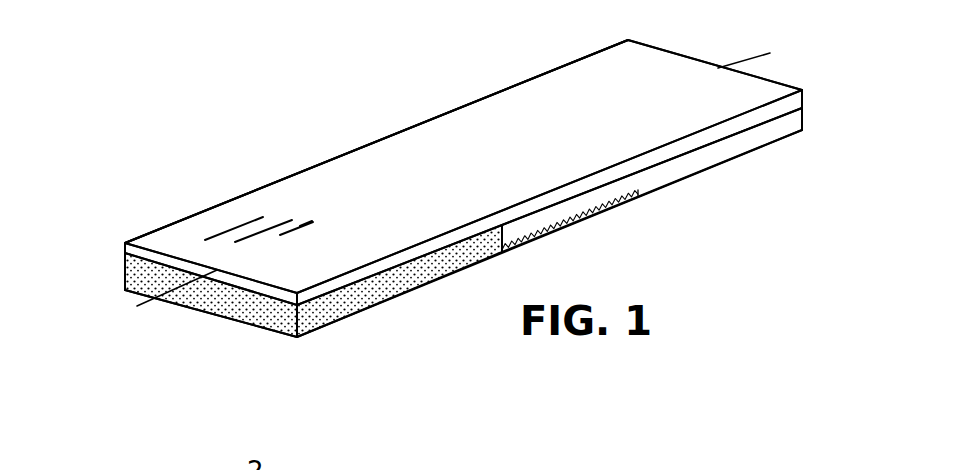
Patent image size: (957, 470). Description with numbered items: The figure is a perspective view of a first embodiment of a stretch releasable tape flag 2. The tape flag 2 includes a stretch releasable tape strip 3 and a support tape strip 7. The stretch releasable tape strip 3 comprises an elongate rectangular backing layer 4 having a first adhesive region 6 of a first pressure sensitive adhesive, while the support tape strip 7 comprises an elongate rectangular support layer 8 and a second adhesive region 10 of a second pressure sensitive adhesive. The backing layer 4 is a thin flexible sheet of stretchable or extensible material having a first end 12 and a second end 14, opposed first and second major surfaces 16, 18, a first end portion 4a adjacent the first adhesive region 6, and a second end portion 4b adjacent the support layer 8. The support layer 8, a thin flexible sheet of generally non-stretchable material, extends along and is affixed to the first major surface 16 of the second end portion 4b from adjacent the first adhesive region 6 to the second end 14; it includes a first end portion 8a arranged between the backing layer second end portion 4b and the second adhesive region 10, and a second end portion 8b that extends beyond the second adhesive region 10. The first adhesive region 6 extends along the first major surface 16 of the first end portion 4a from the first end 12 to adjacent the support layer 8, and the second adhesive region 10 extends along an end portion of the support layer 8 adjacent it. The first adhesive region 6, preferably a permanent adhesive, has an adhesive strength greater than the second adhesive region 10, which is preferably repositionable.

The stretch releasable tape flag 2 is at (322, 113).
The stretch releasable tape strip 3 is at (254, 303).
The backing layer 4 is at (570, 78).
The first end portion 4a is at (230, 228).
The second end portion 4b is at (547, 70).
The first adhesive region 6 is at (323, 328).
The support tape strip 7 is at (640, 195).
The support layer 8 is at (787, 126).
The first end portion 8a is at (531, 220).
The second end portion 8b is at (742, 140).
The second adhesive region 10 is at (588, 223).
The first end 12 is at (130, 252).
The second end 14 is at (772, 79).
The first major surface 16 is at (672, 156).
The second major surface 18 is at (515, 100).